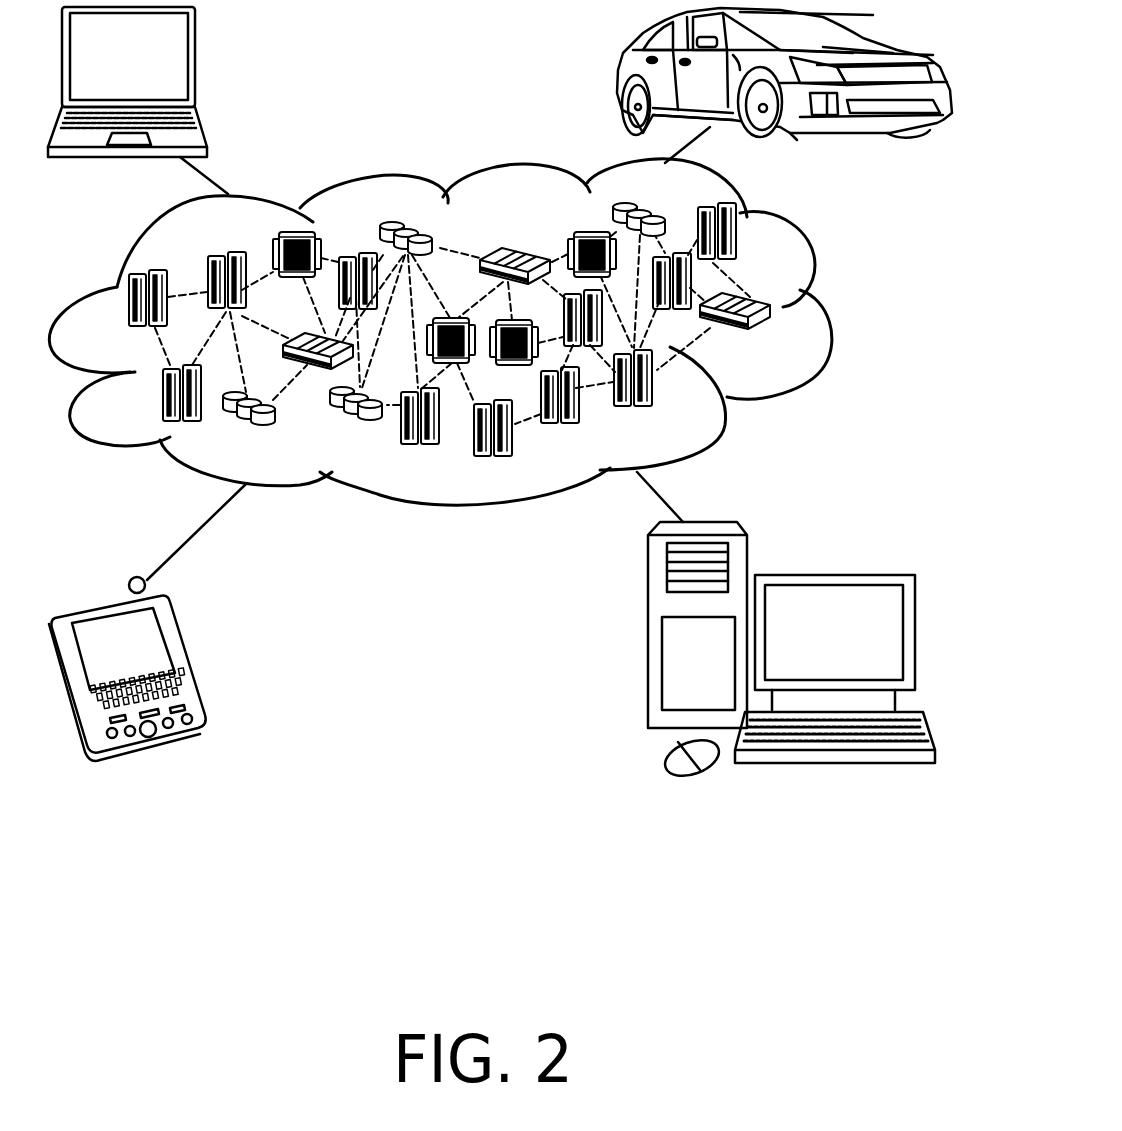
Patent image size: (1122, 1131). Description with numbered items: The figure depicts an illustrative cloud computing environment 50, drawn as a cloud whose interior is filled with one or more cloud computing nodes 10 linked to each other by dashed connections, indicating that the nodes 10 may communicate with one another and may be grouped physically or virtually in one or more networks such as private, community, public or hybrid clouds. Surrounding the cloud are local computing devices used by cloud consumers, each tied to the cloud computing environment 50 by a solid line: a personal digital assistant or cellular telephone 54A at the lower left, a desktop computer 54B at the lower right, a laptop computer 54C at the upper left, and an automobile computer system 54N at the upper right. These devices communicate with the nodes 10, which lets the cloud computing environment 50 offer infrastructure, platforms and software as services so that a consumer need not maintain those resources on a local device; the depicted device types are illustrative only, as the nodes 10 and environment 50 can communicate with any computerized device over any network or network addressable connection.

The cloud computing nodes 10 is at (777, 340).
The cloud computing environment 50 is at (832, 308).
The personal digital assistant or cellular telephone 54A is at (183, 660).
The desktop computer 54B is at (832, 575).
The laptop computer 54C is at (197, 60).
The automobile computer system 54N is at (620, 77).